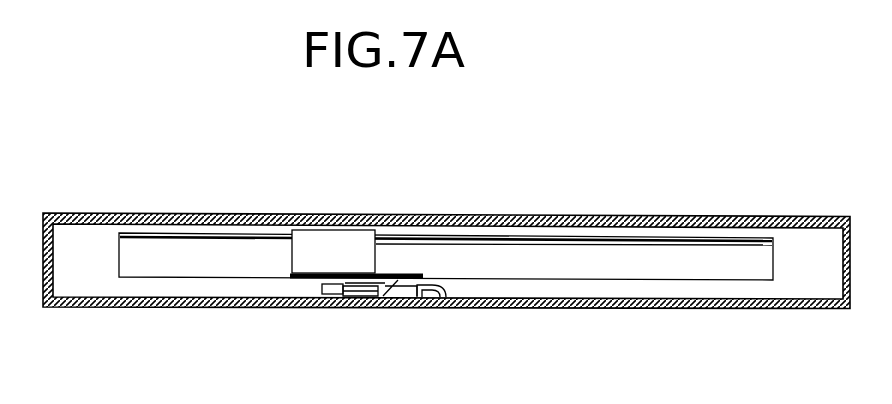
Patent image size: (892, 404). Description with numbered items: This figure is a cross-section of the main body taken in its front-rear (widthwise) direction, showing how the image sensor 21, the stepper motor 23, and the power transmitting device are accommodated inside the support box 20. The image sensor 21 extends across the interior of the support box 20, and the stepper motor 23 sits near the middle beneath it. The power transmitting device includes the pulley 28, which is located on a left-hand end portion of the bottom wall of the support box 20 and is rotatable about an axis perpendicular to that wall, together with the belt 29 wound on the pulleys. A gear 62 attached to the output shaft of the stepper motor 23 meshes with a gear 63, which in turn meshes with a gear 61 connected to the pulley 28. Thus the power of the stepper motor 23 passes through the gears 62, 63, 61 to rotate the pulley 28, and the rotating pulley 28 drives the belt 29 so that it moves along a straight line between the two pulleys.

The support box 20 is at (81, 306).
The image sensor 21 is at (182, 262).
The stepper motor 23 is at (307, 252).
The pulley 28 is at (442, 298).
The belt 29 is at (390, 296).
The gear 61 is at (427, 297).
The gear 62 is at (313, 294).
The gear 63 is at (343, 296).